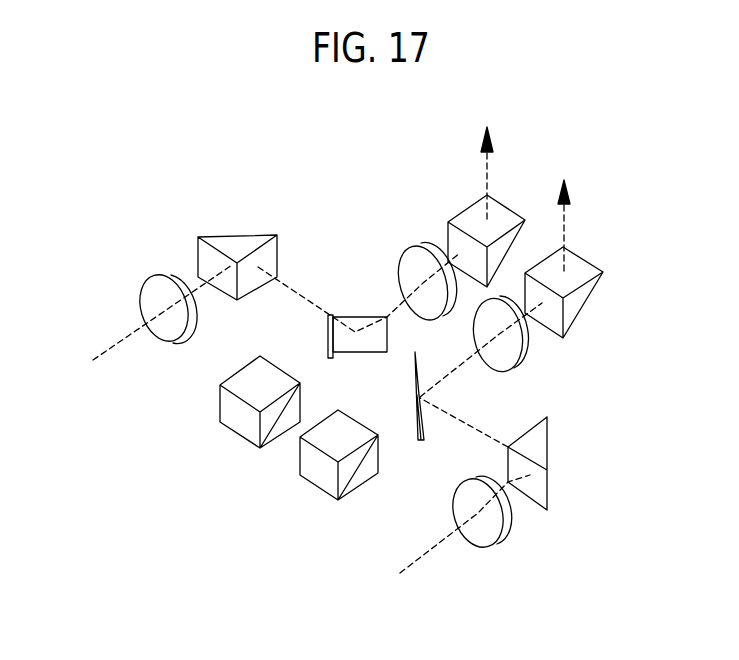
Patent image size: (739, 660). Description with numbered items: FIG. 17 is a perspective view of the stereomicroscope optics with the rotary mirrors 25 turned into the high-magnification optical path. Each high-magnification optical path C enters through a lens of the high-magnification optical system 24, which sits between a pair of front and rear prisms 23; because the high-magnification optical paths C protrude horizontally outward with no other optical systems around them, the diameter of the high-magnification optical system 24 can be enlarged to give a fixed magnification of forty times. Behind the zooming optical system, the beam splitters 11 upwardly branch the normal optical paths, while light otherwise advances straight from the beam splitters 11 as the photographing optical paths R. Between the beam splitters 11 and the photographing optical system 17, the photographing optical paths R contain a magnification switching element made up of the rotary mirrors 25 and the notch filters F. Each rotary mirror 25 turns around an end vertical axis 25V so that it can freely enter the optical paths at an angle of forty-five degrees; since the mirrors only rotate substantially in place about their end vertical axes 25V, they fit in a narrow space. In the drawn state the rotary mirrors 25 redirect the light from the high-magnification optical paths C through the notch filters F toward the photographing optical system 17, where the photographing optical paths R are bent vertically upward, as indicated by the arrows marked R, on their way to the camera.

The beam splitter 11 is at (240, 433).
The photographing optical system 17 is at (467, 207).
The prism 23 is at (227, 237).
The high-magnification optical system 24 is at (140, 300).
The rotary mirror 25 is at (358, 315).
The end vertical axis 25V is at (328, 333).
The notch filter F is at (397, 253).
The photographing optical path R is at (523, 130).
The high-magnification optical path C is at (233, 479).